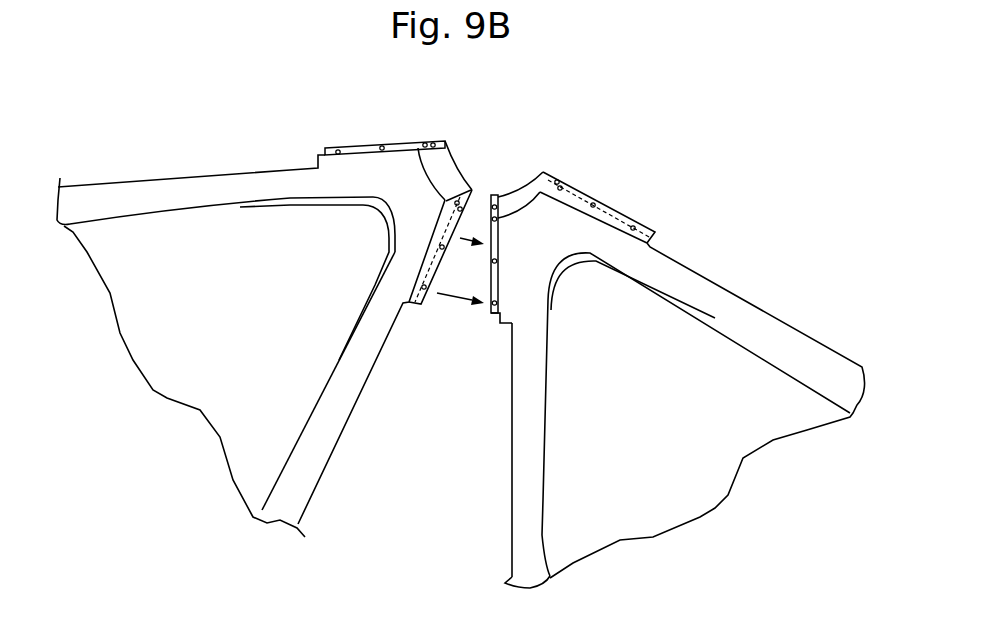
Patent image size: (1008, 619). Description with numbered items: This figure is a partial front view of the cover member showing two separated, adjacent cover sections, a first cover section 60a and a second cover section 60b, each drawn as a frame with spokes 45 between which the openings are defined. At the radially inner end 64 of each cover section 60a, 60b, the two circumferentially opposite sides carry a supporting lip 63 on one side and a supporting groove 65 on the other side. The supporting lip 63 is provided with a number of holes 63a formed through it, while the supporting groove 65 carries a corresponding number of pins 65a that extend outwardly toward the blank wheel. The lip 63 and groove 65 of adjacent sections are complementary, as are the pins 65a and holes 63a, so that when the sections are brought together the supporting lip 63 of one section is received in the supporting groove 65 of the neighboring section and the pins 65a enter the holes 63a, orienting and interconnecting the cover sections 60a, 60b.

The first cover section 60a is at (163, 178).
The second cover section 60b is at (766, 305).
The spoke 45 is at (320, 480).
The supporting lip 63 is at (361, 155).
The holes 63a is at (338, 150).
The radially inner end 64 is at (452, 178).
The supporting groove 65 is at (421, 306).
The pins 65a is at (423, 286).